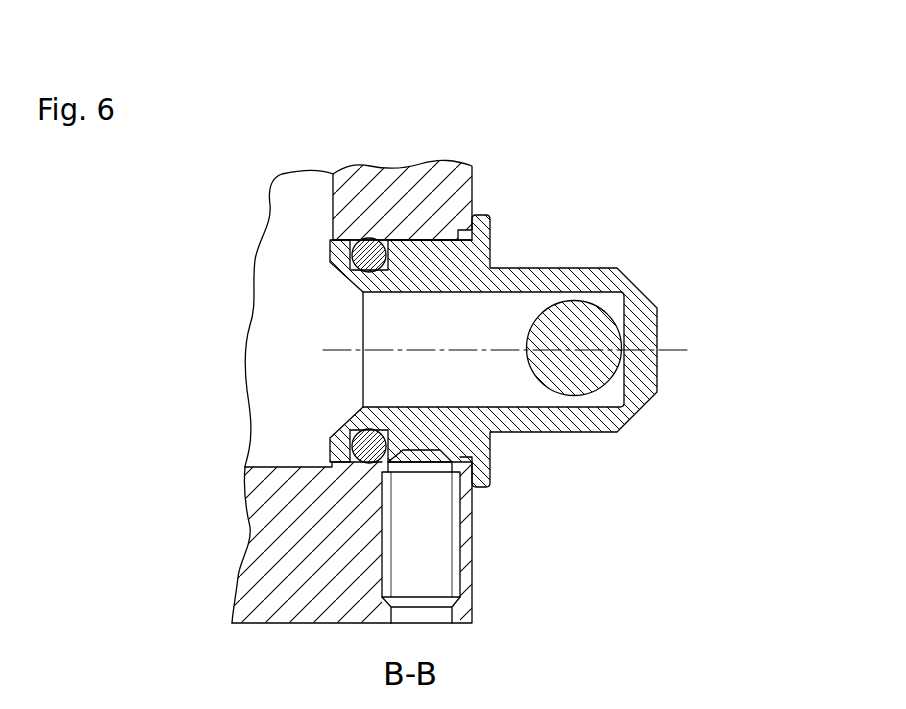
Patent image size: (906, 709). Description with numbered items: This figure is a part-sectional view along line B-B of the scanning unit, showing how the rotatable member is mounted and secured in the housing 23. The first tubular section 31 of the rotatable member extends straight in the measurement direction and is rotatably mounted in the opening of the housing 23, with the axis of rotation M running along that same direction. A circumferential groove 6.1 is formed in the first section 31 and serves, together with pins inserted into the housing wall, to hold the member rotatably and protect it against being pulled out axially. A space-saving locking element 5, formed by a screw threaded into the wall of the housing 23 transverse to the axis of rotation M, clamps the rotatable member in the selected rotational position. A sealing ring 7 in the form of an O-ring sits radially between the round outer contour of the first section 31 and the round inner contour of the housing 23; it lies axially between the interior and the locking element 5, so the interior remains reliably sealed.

The housing 23 is at (428, 185).
The sealing ring 7 is at (362, 238).
The circumferential groove 6.1 is at (398, 244).
The first tubular section 31 is at (562, 283).
The axis of rotation M is at (677, 349).
The locking element 5 is at (432, 544).